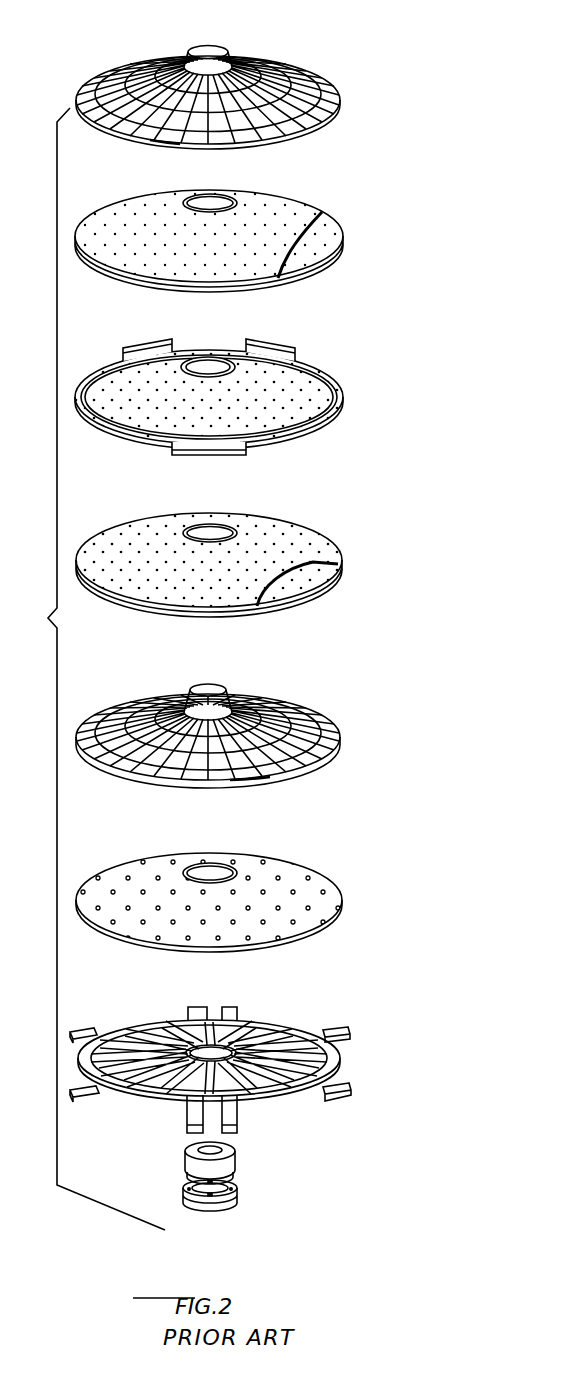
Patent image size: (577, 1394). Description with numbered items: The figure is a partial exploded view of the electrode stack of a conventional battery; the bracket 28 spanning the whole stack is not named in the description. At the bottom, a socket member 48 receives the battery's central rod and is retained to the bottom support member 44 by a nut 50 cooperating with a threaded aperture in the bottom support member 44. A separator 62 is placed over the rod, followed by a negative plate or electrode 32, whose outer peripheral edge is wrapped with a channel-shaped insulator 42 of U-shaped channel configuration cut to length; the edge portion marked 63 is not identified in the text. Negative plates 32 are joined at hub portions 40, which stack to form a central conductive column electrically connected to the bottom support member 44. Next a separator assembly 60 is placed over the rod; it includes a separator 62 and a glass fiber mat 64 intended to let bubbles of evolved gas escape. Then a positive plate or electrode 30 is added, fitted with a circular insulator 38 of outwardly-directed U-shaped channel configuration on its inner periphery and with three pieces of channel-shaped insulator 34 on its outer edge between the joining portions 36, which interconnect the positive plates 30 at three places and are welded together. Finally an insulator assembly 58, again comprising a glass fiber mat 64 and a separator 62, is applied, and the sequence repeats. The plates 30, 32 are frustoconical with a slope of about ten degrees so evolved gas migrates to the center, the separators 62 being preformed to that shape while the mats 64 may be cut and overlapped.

The filter cartridge assembly 28 is at (86, 669).
The positive plate or electrode 30 is at (343, 350).
The negative plate or electrode 32 is at (316, 54).
The channel-shaped insulator 34 is at (203, 347).
The joining portions 36 is at (148, 350).
The circular insulator 38 is at (227, 355).
The hub portions 40 is at (210, 64).
The channel-shaped insulator 42 is at (326, 126).
The bottom support member 44 is at (333, 1065).
The socket member 48 is at (230, 1162).
The nut 50 is at (236, 1190).
The insulator assembly 58 is at (360, 250).
The separator assembly 60 is at (348, 542).
The separator 62 is at (270, 205).
The rim edge 63 is at (163, 145).
The glass fiber mat 64 is at (327, 235).